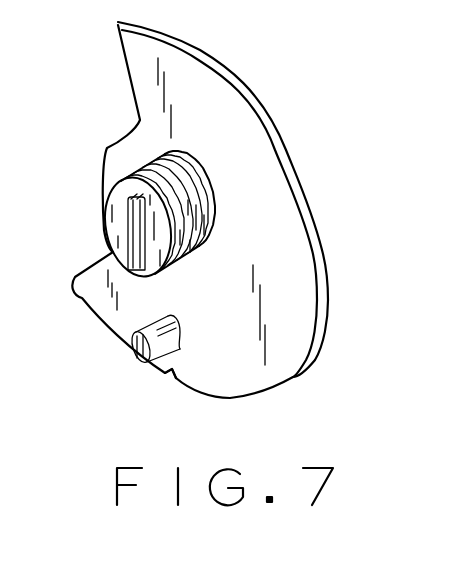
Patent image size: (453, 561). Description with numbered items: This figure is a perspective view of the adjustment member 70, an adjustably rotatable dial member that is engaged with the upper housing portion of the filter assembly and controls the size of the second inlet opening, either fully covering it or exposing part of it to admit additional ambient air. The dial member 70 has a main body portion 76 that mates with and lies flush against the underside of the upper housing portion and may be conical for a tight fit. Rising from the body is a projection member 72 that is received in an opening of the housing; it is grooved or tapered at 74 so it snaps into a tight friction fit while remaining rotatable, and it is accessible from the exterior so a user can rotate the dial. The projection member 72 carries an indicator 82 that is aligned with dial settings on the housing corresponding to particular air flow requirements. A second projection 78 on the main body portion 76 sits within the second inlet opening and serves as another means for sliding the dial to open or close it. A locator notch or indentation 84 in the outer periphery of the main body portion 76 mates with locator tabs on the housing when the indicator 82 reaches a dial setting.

The adjustment member 70 is at (86, 182).
The projection member 72 is at (120, 185).
The groove or taper 74 is at (168, 193).
The main body portion 76 is at (268, 212).
The projection 78 is at (130, 345).
The indicator 82 is at (133, 228).
The locator notch or indentation 84 is at (170, 378).